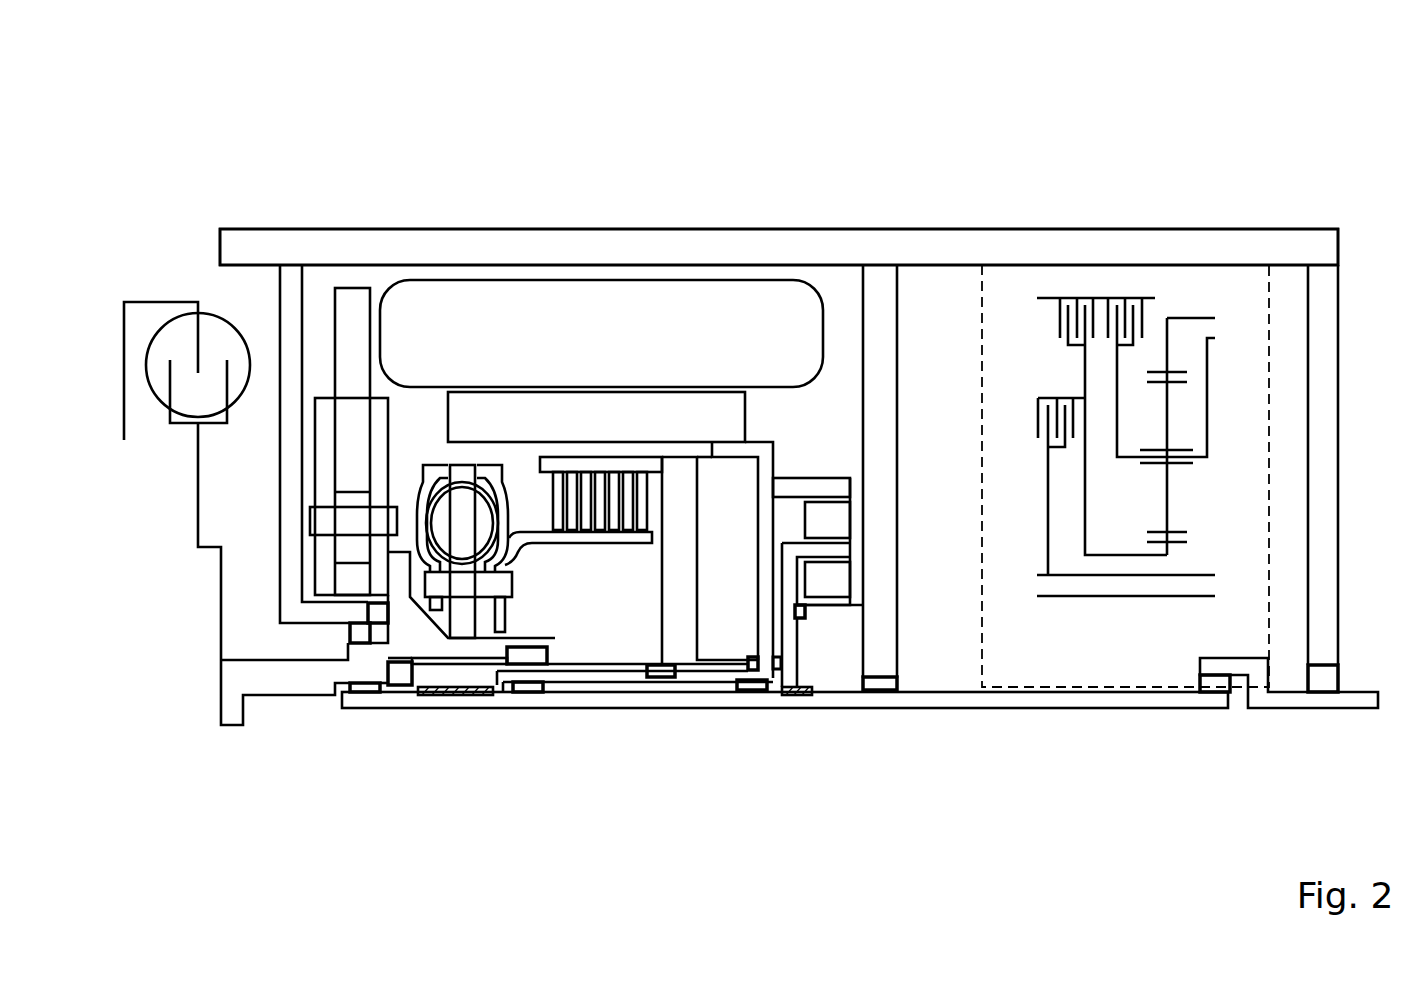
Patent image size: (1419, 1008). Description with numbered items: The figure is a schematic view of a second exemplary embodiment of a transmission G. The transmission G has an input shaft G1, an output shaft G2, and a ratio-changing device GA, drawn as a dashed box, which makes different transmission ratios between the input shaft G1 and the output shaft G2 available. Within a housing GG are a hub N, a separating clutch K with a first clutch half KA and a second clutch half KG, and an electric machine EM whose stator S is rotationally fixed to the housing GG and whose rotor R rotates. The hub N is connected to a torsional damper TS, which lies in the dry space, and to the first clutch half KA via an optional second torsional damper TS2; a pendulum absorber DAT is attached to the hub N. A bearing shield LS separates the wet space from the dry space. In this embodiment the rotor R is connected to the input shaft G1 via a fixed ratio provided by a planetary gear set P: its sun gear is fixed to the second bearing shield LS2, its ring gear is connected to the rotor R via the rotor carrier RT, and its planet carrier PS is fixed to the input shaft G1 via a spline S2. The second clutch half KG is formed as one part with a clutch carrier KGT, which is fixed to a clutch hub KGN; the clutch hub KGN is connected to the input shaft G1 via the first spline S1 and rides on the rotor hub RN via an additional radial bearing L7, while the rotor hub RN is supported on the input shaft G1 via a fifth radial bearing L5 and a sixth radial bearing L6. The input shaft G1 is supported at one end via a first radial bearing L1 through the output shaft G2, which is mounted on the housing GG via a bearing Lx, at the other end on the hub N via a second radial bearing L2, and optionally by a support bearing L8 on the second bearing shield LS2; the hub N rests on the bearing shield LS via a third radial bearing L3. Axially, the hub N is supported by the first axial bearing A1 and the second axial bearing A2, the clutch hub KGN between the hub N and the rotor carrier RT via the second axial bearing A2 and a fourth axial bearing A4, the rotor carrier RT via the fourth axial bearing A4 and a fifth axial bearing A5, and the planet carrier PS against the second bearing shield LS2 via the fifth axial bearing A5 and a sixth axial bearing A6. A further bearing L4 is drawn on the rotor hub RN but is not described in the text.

The transmission G is at (1210, 203).
The housing GG is at (253, 245).
The ratio-changing device GA is at (1273, 371).
The bearing shield LS is at (288, 295).
The second bearing shield LS2 is at (882, 318).
The pendulum absorber DAT is at (350, 281).
The torsional damper TS is at (168, 470).
The second torsional damper TS2 is at (427, 449).
The electric machine EM is at (465, 82).
The stator S is at (483, 318).
The rotor R is at (548, 422).
The second clutch half KG is at (605, 462).
The clutch carrier KGT is at (681, 478).
The clutch hub KGN is at (473, 675).
The separating clutch K is at (598, 560).
The first clutch half KA is at (763, 496).
The rotor carrier RT is at (655, 537).
The rotor hub RN is at (593, 678).
The hub N is at (268, 673).
The planetary gear set P is at (834, 638).
The planet carrier PS is at (783, 663).
The first spline S1 is at (440, 700).
The spline S2 is at (797, 698).
The input shaft G1 is at (545, 698).
The output shaft G2 is at (1283, 700).
The first axial bearing A1 is at (362, 613).
The second axial bearing A2 is at (397, 688).
The fourth axial bearing A4 is at (750, 656).
The fifth axial bearing A5 is at (788, 627).
The sixth axial bearing A6 is at (811, 612).
The first radial bearing L1 is at (1213, 695).
The second radial bearing L2 is at (362, 698).
The third radial bearing L3 is at (342, 637).
The fourth bearing L4 is at (550, 654).
The fifth radial bearing L5 is at (520, 696).
The sixth radial bearing L6 is at (750, 694).
The additional radial bearing L7 is at (662, 681).
The support bearing L8 is at (902, 684).
The bearing Lx is at (1327, 695).